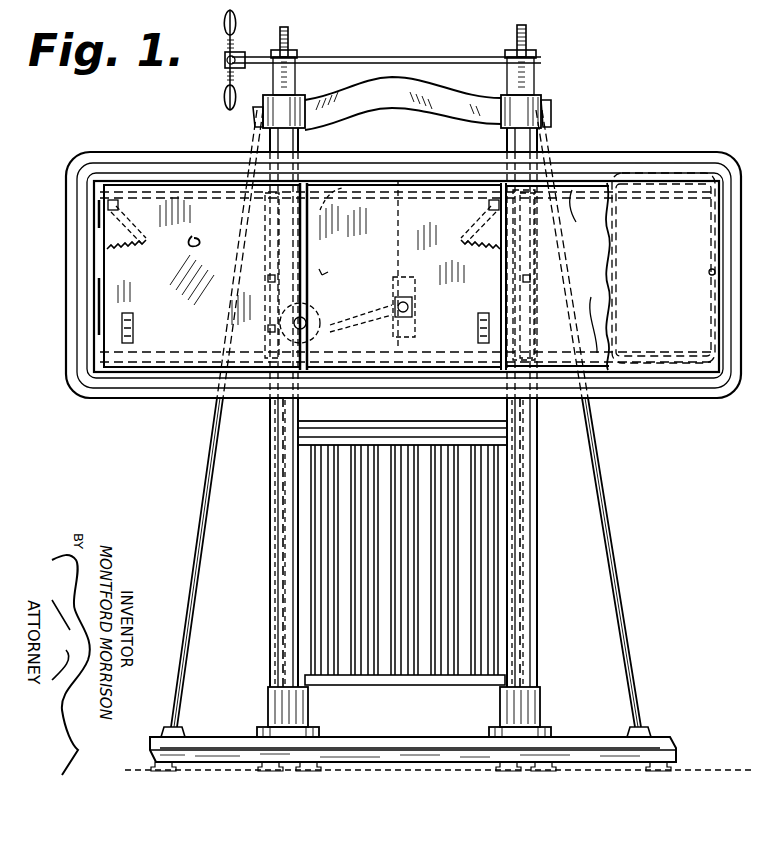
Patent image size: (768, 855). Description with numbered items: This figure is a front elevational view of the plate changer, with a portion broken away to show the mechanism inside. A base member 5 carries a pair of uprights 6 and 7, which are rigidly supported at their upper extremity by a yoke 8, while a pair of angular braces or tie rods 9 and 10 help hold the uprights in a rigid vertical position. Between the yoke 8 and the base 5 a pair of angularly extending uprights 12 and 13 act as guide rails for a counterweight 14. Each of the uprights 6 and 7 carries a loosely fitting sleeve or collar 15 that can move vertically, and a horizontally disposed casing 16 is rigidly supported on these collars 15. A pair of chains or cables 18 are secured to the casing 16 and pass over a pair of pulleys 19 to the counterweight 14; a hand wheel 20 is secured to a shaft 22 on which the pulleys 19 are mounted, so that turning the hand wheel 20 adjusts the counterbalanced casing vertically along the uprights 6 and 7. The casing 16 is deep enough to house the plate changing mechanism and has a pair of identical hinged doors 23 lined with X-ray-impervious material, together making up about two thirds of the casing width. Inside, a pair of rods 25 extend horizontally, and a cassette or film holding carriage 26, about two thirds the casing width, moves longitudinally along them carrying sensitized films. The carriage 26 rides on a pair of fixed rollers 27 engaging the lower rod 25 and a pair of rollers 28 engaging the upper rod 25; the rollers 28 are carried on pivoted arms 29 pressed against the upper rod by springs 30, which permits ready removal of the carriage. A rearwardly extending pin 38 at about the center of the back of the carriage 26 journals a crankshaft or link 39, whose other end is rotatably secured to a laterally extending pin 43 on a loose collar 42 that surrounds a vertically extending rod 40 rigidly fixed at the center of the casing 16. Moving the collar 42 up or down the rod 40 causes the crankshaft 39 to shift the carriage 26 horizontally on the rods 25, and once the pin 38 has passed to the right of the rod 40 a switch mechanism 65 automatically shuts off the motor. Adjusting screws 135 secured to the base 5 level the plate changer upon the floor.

The base member 5 is at (378, 748).
The upright 6 is at (273, 536).
The upright 7 is at (540, 541).
The yoke 8 is at (387, 97).
The angular brace or tie rod 9 is at (206, 468).
The angular brace or tie rod 10 is at (607, 492).
The angularly extending upright 12 is at (513, 481).
The angularly extending upright 13 is at (276, 493).
The counterweight 14 is at (445, 678).
The sleeve or collar 15 is at (264, 262).
The casing 16 is at (690, 153).
The chain or cable 18 is at (291, 142).
The pulley 19 is at (291, 43).
The hand wheel 20 is at (222, 86).
The shaft 22 is at (405, 57).
The hinged door 23 is at (663, 268).
The rod 25 is at (558, 275).
The cassette or film holding carriage 26 is at (212, 183).
The fixed roller 27 is at (133, 341).
The roller 28 is at (118, 206).
The pivoted arm 29 is at (137, 226).
The spring 30 is at (129, 257).
The rearwardly extending pin 38 is at (312, 331).
The crankshaft or link 39 is at (352, 312).
The vertically extending rod 40 is at (397, 219).
The loose collar 42 is at (410, 290).
The laterally extending pin 43 is at (416, 312).
The switch mechanism 65 is at (323, 275).
The adjusting screw 135 is at (167, 764).